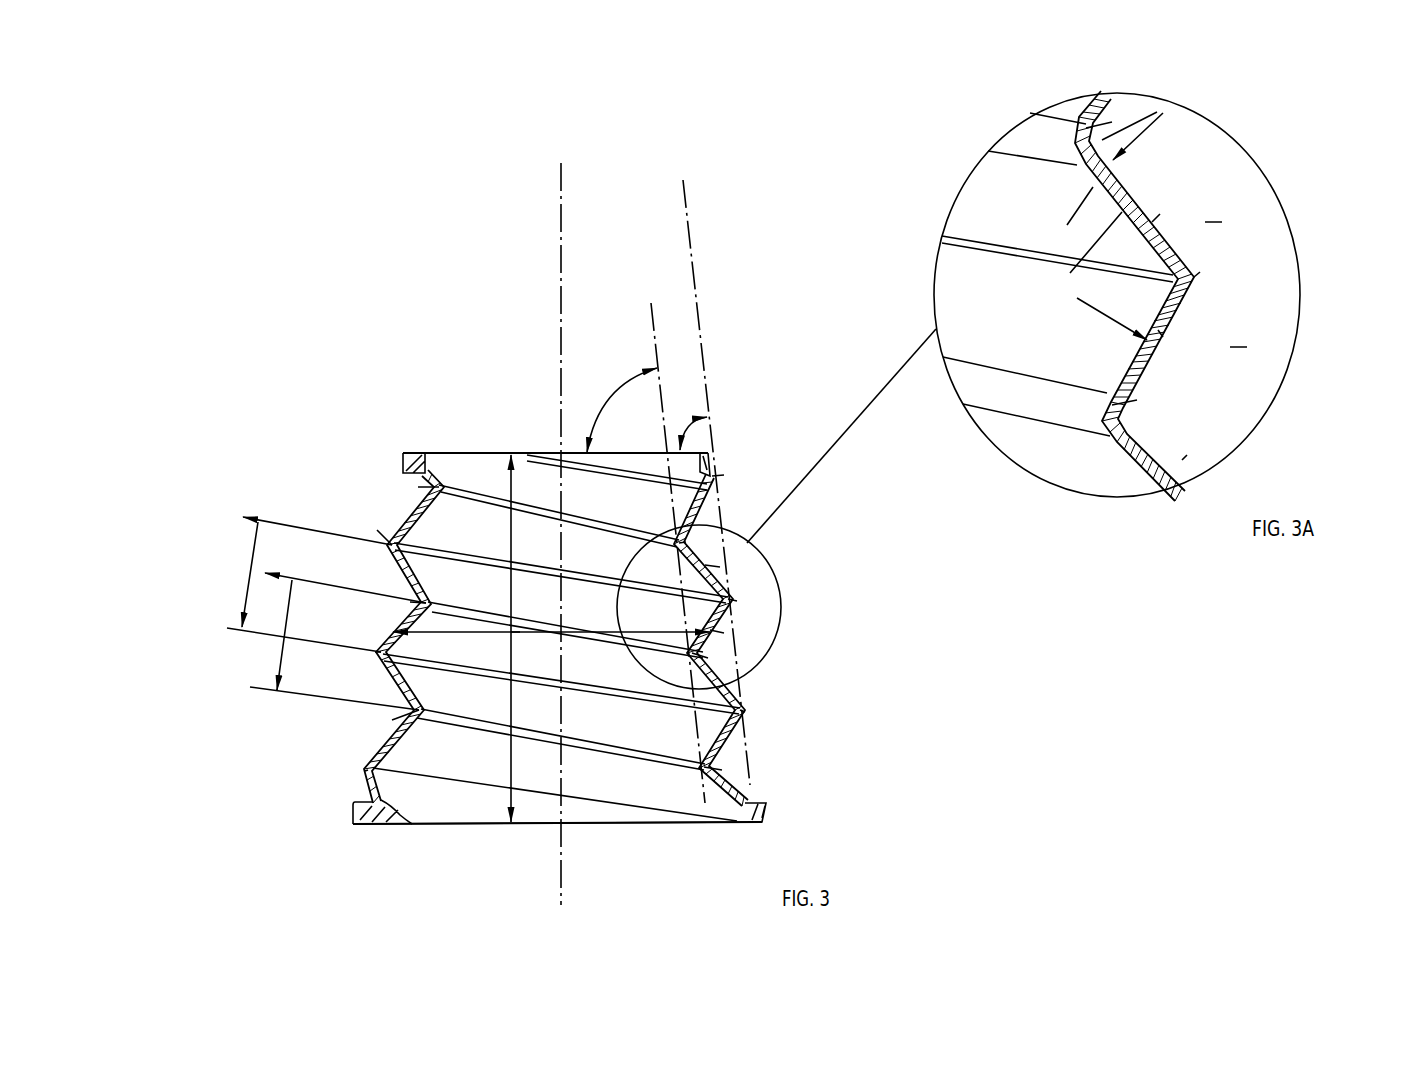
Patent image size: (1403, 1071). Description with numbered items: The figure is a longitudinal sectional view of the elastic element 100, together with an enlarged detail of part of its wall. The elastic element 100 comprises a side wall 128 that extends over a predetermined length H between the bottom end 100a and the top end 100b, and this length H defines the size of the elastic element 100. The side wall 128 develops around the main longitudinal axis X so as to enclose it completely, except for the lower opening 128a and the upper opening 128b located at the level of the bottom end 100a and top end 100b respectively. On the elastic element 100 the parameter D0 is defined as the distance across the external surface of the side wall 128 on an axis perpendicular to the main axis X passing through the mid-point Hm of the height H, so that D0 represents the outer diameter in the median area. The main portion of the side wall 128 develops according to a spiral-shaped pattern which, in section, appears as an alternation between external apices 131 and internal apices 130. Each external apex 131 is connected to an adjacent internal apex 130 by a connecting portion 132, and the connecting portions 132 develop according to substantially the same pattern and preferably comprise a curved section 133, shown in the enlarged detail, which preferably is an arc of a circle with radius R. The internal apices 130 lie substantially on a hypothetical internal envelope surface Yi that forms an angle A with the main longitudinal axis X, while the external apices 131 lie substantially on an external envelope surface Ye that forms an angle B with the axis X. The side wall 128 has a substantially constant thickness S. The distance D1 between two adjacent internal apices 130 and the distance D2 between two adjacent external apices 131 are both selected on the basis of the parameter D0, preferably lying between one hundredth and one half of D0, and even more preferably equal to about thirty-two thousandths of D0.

In FIG. 3, the elastic element 100 is at (478, 298).
In FIG. 3, the bottom end 100a is at (343, 828).
In FIG. 3, the top end 100b is at (384, 440).
In FIG. 3, the side wall 128 is at (388, 520).
In FIG. 3A, the side wall 128 is at (1068, 296).
In FIG. 3, the lower opening 128a is at (465, 827).
In FIG. 3, the upper opening 128b is at (523, 451).
In FIG. 3, the internal apices 130 is at (418, 487).
In FIG. 3A, the internal apices 130 is at (1112, 122).
In FIG. 3, the external apices 131 is at (377, 530).
In FIG. 3A, the external apices 131 is at (1200, 272).
In FIG. 3, the connecting portion 132 is at (720, 567).
In FIG. 3A, the connecting portion 132 is at (1222, 222).
In FIG. 3A, the curved section 133 is at (1160, 214).
In FIG. 3, the main longitudinal axis X is at (557, 178).
In FIG. 3, the external envelope surface Ye is at (683, 200).
In FIG. 3, the internal envelope surface Yi is at (654, 332).
In FIG. 3, the angle A is at (622, 410).
In FIG. 3, the angle B is at (691, 421).
In FIG. 3, the length H is at (509, 454).
In FIG. 3, the mid-point of the height Hm is at (515, 630).
In FIG. 3, the outer diameter parameter D0 is at (473, 635).
In FIG. 3, the distance between adjacent internal apices D1 is at (281, 651).
In FIG. 3, the distance between adjacent external apices D2 is at (248, 577).
In FIG. 3A, the radius of curved section R is at (1093, 247).
In FIG. 3A, the wall thickness S is at (1105, 133).